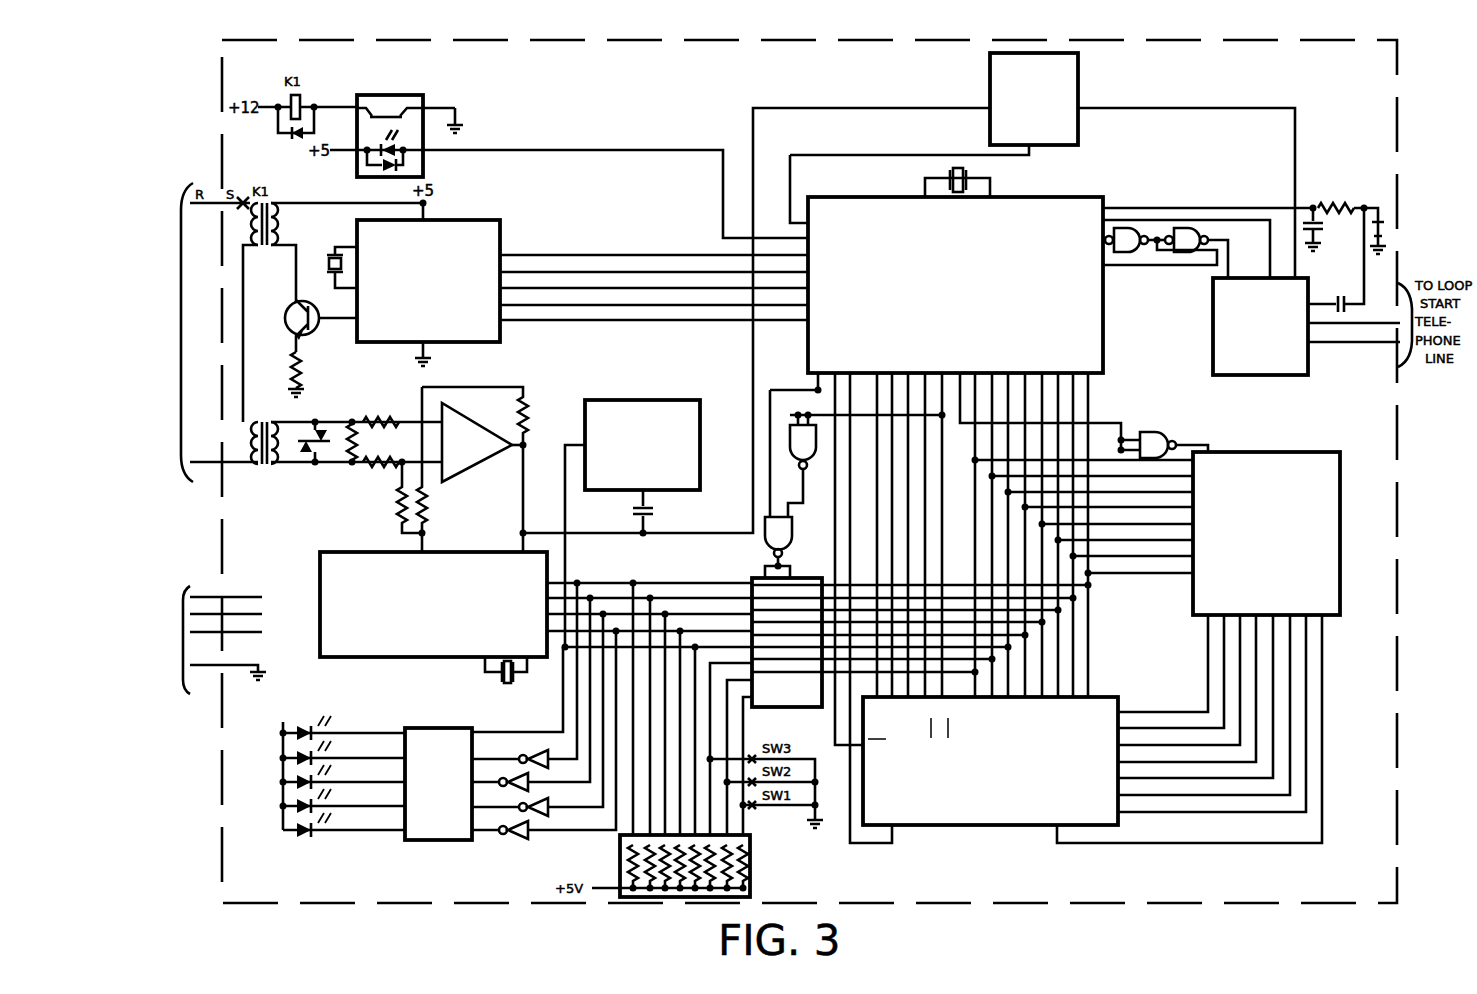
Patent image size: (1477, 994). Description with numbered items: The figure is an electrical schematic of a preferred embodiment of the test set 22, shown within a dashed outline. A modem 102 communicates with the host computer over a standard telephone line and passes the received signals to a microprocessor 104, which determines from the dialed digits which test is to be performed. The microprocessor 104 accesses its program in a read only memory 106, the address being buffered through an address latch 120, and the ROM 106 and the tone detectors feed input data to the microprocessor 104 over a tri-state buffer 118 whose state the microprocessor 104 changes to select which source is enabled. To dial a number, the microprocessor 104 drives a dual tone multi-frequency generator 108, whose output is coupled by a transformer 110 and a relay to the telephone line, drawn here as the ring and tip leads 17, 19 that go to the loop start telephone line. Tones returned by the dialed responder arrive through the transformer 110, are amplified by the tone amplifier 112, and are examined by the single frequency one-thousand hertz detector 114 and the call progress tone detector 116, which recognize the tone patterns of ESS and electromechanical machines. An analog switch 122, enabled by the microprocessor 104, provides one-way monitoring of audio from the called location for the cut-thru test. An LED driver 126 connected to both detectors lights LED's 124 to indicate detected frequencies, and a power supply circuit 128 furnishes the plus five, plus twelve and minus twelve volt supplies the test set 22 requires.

The test set 22 is at (1403, 142).
The modem 102 is at (1275, 363).
The microprocessor 104 is at (1068, 197).
The read only memory (ROM) 106 is at (1005, 812).
The dual tone multi-frequency (DTMF) generator 108 is at (490, 232).
The transformer 110 is at (266, 478).
The tone amplifier 112 is at (455, 425).
The 1000 Hz detector 114 is at (588, 400).
The call progress tone detector 116 is at (440, 552).
The tri-state buffer 118 is at (752, 580).
The address latch 120 is at (1248, 470).
The analog switch 122 is at (1072, 88).
The LED's 124 is at (301, 840).
The LED driver 126 is at (432, 830).
The power supply circuit 128 is at (189, 683).
The ring lead 17 is at (1354, 315).
The tip lead 19 is at (1354, 336).